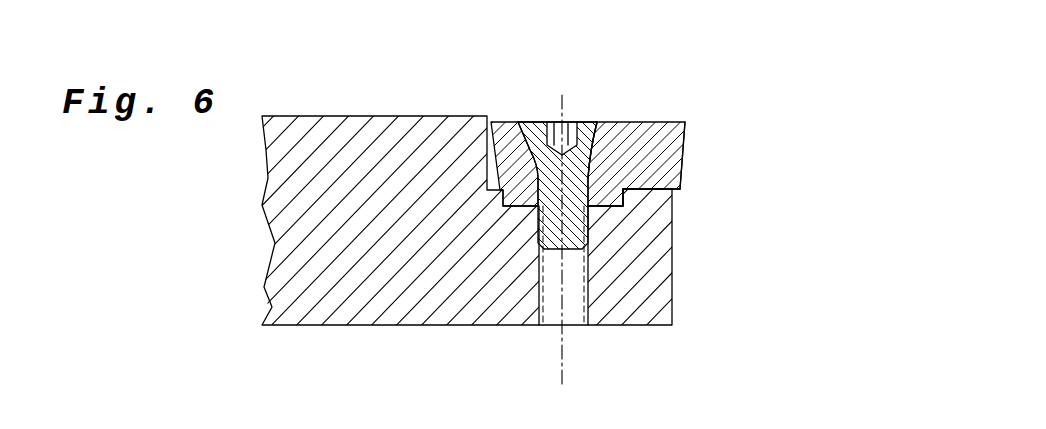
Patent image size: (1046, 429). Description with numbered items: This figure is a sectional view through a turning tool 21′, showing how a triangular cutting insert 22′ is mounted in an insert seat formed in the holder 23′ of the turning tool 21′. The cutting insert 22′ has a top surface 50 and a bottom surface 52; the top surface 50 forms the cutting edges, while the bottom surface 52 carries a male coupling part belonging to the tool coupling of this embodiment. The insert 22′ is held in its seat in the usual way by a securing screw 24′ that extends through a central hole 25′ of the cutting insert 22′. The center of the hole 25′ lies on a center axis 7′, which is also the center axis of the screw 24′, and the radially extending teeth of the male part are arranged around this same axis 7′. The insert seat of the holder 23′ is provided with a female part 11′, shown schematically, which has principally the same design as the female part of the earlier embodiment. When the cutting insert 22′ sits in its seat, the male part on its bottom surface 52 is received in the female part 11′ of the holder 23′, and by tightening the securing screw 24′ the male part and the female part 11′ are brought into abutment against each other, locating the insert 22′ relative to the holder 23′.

The center axis 7′ is at (563, 359).
The female part 11′ is at (627, 203).
The turning tool 21′ is at (463, 73).
The cutting insert 22′ is at (677, 118).
The holder 23′ is at (342, 113).
The securing screw 24′ is at (592, 118).
The central hole 25′ is at (588, 192).
The top surface 50 is at (638, 118).
The bottom surface 52 is at (624, 190).